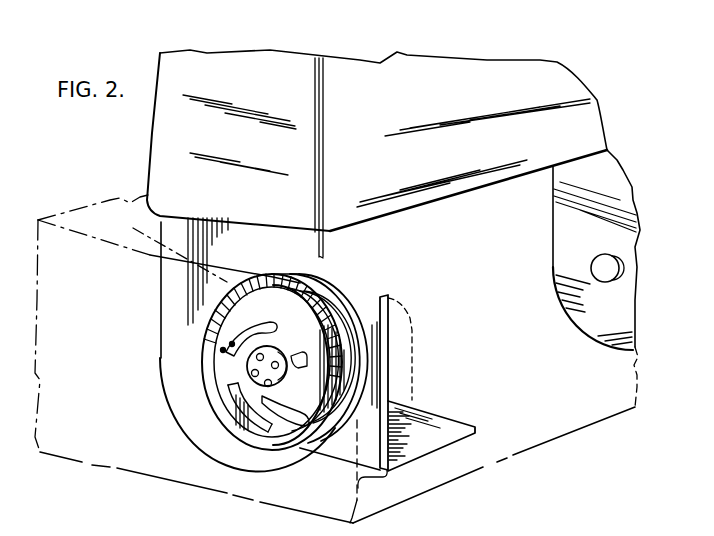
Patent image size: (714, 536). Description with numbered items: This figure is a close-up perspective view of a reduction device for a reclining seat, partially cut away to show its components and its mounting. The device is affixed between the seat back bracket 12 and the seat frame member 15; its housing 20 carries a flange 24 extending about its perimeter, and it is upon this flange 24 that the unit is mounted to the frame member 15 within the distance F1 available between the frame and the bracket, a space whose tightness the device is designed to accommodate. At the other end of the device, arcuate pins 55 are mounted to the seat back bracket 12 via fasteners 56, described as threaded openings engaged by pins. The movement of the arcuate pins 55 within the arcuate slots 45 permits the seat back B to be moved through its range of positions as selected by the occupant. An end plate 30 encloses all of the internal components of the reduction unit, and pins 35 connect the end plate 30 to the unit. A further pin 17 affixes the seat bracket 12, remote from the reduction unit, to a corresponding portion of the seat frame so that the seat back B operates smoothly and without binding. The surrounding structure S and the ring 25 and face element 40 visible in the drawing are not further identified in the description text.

The seat back B is at (523, 75).
The support housing S is at (58, 258).
The seat back bracket 12 is at (563, 208).
The seat frame member 15 is at (437, 428).
The pin 17 is at (602, 272).
The housing 20 is at (378, 294).
The flange 24 is at (330, 283).
The inner ring 25 is at (336, 415).
The end plate 30 is at (253, 385).
The pins 35 is at (267, 410).
The face ring 40 is at (287, 322).
The arcuate slots 45 is at (302, 349).
The arcuate pins 55 is at (233, 343).
The fasteners 56 is at (222, 350).
The distance F1 is at (372, 490).